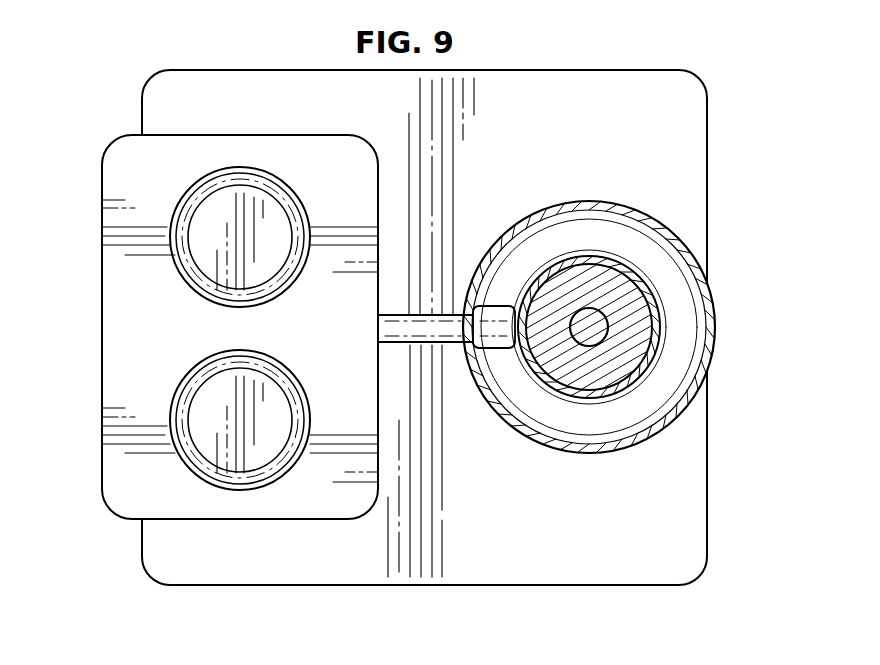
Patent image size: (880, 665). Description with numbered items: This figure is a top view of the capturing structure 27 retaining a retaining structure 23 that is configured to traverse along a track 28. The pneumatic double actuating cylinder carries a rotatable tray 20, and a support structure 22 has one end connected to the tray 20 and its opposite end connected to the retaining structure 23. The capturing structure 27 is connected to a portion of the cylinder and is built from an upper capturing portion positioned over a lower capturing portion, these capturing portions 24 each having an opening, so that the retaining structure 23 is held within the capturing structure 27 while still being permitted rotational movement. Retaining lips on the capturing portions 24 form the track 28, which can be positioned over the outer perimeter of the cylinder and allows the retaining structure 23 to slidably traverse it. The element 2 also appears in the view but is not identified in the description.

The housing 2 is at (707, 179).
The rotatable tray 20 is at (101, 352).
The support structure 22 is at (430, 344).
The retaining structure 23 is at (497, 315).
The capturing portion 24 is at (605, 451).
The capturing structure 27 is at (521, 198).
The track 28 is at (690, 315).